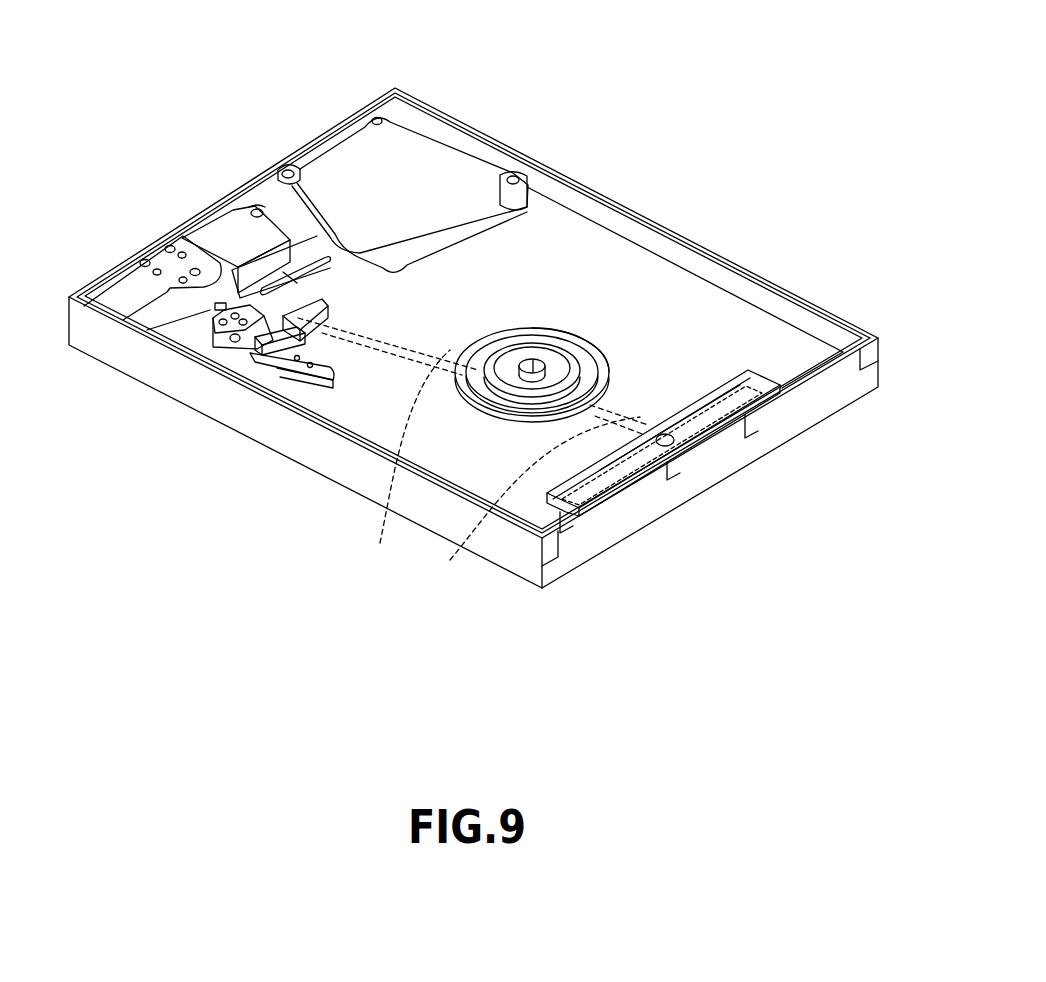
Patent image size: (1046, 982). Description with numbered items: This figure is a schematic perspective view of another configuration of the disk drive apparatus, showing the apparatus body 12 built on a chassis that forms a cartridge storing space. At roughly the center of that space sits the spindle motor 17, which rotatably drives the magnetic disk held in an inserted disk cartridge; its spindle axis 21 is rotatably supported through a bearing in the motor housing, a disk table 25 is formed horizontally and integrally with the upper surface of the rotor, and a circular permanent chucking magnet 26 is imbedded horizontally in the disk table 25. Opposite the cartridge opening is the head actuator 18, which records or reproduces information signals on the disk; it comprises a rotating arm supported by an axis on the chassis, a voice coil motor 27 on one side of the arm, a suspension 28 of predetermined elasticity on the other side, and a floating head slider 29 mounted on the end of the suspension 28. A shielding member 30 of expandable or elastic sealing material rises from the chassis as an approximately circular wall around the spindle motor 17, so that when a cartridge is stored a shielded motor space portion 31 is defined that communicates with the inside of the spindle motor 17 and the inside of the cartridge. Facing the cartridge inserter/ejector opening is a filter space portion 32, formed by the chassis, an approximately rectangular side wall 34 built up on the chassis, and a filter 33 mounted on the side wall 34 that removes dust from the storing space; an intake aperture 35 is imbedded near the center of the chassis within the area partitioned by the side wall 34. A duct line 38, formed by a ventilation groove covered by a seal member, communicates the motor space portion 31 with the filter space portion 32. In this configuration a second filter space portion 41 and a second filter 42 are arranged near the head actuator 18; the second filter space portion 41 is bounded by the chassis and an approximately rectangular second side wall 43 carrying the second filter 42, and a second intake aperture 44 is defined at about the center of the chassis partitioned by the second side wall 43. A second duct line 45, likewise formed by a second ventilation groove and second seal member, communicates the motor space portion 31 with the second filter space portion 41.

The apparatus body 12 is at (627, 39).
The spindle motor 17 is at (602, 337).
The head actuator 18 is at (220, 238).
The spindle axis 21 is at (590, 364).
The disk table 25 is at (525, 350).
The chucking magnet 26 is at (290, 277).
The voice coil motor 27 is at (443, 165).
The suspension 28 is at (303, 362).
The floating head slider 29 is at (323, 390).
The shielding member 30 is at (772, 282).
The motor space portion 31 is at (605, 373).
The filter space portion 32 is at (745, 396).
The filter 33 is at (612, 480).
The side wall 34 is at (568, 513).
The intake aperture 35 is at (672, 446).
The duct line 38 is at (529, 495).
The second filter space portion 41 is at (302, 300).
The second filter 42 is at (218, 334).
The second side wall 43 is at (279, 340).
The second intake aperture 44 is at (226, 357).
The second duct line 45 is at (403, 459).